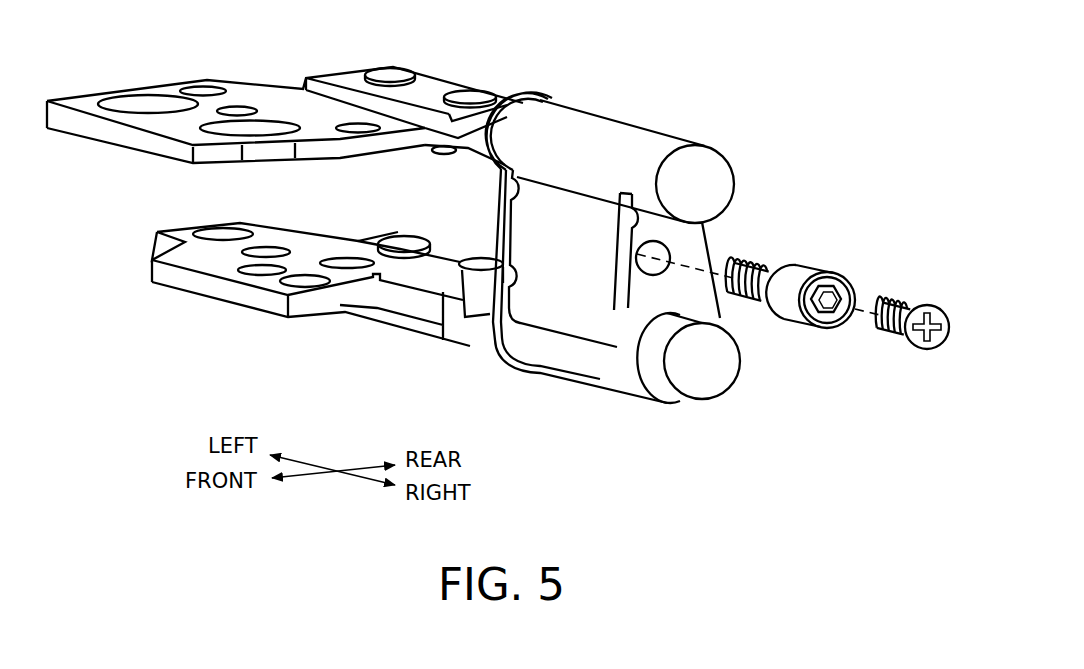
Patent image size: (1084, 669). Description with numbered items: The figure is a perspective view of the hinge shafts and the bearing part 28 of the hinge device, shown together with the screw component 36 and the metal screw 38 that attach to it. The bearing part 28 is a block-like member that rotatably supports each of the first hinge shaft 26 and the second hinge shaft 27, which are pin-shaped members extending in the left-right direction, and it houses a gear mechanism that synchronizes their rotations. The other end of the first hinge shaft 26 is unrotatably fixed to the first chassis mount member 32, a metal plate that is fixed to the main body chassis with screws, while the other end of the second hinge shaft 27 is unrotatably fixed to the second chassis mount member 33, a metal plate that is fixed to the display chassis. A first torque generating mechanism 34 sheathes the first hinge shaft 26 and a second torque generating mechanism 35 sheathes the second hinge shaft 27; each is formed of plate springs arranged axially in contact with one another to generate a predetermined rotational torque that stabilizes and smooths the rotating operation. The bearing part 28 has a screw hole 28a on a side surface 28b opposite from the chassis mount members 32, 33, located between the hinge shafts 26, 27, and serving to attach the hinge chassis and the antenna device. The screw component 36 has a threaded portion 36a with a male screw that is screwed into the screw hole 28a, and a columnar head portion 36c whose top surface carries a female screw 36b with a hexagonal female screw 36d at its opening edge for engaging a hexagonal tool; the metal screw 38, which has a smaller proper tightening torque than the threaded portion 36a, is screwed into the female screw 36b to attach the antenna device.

The first hinge shaft 26 is at (483, 297).
The second hinge shaft 27 is at (487, 150).
The bearing part 28 is at (642, 249).
The screw hole 28a is at (670, 255).
The side surface 28b is at (637, 308).
The first chassis mount member 32 is at (205, 290).
The second chassis mount member 33 is at (282, 103).
The first torque generating mechanism 34 is at (557, 350).
The second torque generating mechanism 35 is at (640, 150).
The screw component 36 is at (831, 307).
The threaded portion 36a is at (745, 302).
The female screw 36b is at (823, 333).
The head portion 36c is at (783, 312).
The hexagonal female screw 36d is at (847, 298).
The metal screw 38 is at (928, 349).